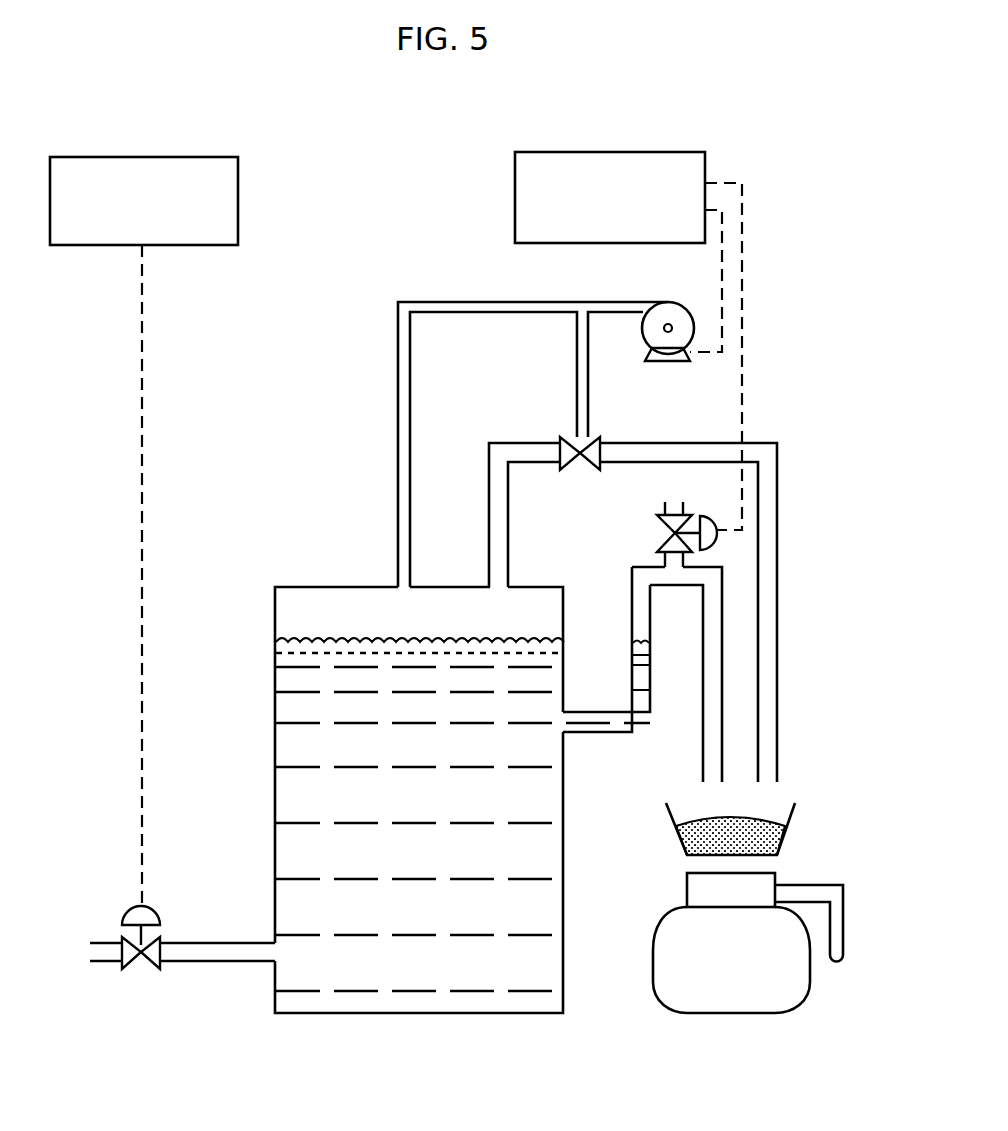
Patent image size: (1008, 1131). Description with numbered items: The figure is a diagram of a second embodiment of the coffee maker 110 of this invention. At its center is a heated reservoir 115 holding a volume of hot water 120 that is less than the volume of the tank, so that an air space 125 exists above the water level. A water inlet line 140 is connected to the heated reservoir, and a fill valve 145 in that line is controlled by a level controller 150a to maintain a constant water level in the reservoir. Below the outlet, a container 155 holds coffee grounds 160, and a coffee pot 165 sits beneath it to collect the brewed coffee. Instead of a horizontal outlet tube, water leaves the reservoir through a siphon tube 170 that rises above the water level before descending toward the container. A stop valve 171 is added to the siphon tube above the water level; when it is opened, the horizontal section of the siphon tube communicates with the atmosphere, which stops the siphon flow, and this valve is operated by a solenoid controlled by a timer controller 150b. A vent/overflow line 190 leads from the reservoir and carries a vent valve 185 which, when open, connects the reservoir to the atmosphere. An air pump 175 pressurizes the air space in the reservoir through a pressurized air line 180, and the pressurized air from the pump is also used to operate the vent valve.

The coffee maker 110 is at (767, 184).
The heated reservoir 115 is at (517, 1014).
The hot water 120 is at (423, 804).
The air space 125 is at (348, 622).
The water inlet line 140 is at (108, 962).
The fill valve 145 is at (150, 970).
The level controller 150a is at (153, 157).
The timer controller 150b is at (548, 152).
The container 155 is at (795, 810).
The coffee grounds 160 is at (780, 820).
The coffee pot 165 is at (757, 1013).
The siphon tube 170 is at (650, 719).
The stop valve 171 is at (657, 533).
The air pump 175 is at (671, 362).
The pressurized air line 180 is at (398, 376).
The vent valve 185 is at (591, 470).
The vent/overflow line 190 is at (778, 466).